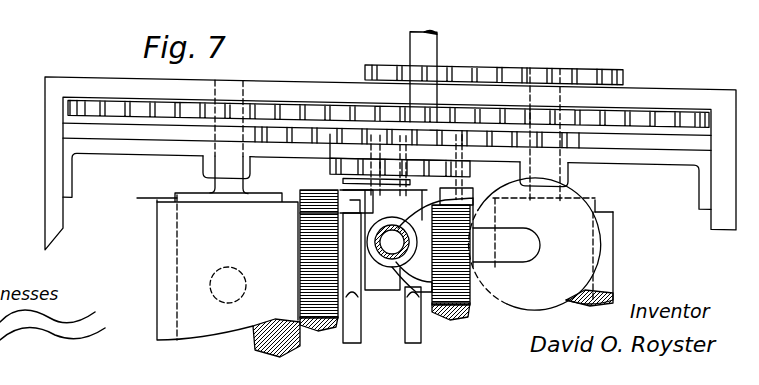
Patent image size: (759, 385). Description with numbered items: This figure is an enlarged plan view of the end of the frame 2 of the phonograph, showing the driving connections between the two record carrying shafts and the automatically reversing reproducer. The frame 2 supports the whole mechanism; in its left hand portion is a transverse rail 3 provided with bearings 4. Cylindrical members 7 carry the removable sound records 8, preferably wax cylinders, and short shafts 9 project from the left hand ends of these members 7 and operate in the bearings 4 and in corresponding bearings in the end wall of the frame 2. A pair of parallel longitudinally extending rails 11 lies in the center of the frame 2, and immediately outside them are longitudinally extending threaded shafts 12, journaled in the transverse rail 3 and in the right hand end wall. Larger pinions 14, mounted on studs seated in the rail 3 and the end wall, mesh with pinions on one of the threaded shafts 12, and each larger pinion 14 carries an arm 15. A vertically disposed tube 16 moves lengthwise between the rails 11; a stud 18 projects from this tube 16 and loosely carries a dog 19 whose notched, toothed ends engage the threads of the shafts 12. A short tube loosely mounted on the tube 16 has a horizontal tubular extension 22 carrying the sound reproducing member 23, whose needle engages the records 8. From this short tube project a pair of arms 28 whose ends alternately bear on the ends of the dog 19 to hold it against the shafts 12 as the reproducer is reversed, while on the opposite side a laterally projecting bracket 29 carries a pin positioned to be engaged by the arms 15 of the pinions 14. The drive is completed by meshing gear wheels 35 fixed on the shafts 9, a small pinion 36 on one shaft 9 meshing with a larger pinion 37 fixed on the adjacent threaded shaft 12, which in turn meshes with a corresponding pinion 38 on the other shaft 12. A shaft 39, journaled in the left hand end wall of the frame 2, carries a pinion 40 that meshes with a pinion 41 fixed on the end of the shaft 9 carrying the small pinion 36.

The frame 2 is at (43, 164).
The transverse rail 3 is at (104, 152).
The bearings 4 is at (210, 163).
The cylindrical members 7 is at (137, 198).
The sound records 8 is at (157, 250).
The short shafts 9 is at (220, 126).
The rails 11 is at (403, 320).
The threaded shafts 12 is at (315, 327).
The larger pinions 14 is at (330, 166).
The arm 15 is at (300, 210).
The vertically disposed tube 16 is at (385, 240).
The stud 18 is at (228, 285).
The dog 19 is at (300, 235).
The horizontal tubular extension 22 is at (506, 245).
The sound reproducing member 23 is at (570, 248).
The arms 28 is at (470, 200).
The bracket 29 is at (380, 121).
The gear wheels 35 is at (105, 101).
The small pinion 36 is at (574, 117).
The larger pinion 37 is at (483, 114).
The pinion 38 is at (293, 121).
The shaft 39 is at (413, 32).
The pinion 40 is at (388, 63).
The pinion 41 is at (524, 62).